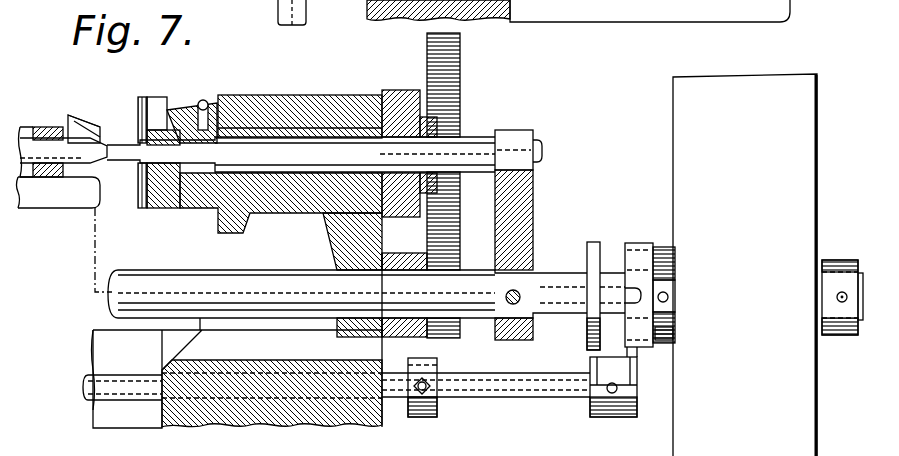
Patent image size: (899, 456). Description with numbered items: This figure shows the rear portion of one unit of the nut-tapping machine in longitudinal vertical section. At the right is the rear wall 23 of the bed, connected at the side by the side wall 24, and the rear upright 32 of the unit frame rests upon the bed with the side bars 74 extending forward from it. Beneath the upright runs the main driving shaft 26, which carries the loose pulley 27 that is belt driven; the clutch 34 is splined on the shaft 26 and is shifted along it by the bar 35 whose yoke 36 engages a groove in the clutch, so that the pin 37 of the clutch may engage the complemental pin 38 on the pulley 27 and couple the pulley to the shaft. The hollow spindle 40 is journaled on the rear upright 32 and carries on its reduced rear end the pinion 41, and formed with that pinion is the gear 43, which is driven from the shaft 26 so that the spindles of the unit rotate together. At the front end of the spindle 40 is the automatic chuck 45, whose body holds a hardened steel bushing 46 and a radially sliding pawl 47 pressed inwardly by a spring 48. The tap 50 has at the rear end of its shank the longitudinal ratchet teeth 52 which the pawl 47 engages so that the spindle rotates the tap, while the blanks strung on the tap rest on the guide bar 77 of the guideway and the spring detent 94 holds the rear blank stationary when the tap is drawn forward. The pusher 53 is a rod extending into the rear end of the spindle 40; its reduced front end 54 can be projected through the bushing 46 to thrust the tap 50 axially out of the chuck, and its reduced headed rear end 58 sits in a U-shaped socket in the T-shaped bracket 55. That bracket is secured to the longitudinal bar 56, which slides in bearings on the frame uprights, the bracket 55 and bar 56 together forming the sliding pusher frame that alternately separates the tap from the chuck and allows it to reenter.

The rear wall 23 is at (198, 424).
The side wall 24 is at (97, 338).
The main driving shaft 26 is at (557, 277).
The pulley 27 is at (797, 86).
The rear upright 32 is at (337, 229).
The clutch 34 is at (637, 243).
The bar 35 is at (523, 400).
The yoke 36 is at (608, 348).
The pin 37 is at (668, 248).
The complemental pin 38 is at (670, 344).
The spindle 40 is at (282, 130).
The pinion 41 is at (395, 90).
The gear 43 is at (462, 54).
The automatic chuck 45 is at (180, 197).
The bushing 46 is at (163, 173).
The pawl 47 is at (153, 103).
The spring 48 is at (190, 102).
The tap 50 is at (33, 127).
The ratchet teeth 52 is at (88, 133).
The pusher 53 is at (468, 147).
The reduced front end 54 is at (132, 157).
The T-shaped bracket 55 is at (535, 193).
The longitudinal bar 56 is at (244, 278).
The headed rear end 58 is at (518, 152).
The side bar 74 is at (95, 273).
The guide bar 77 is at (45, 210).
The spring detent 94 is at (77, 115).